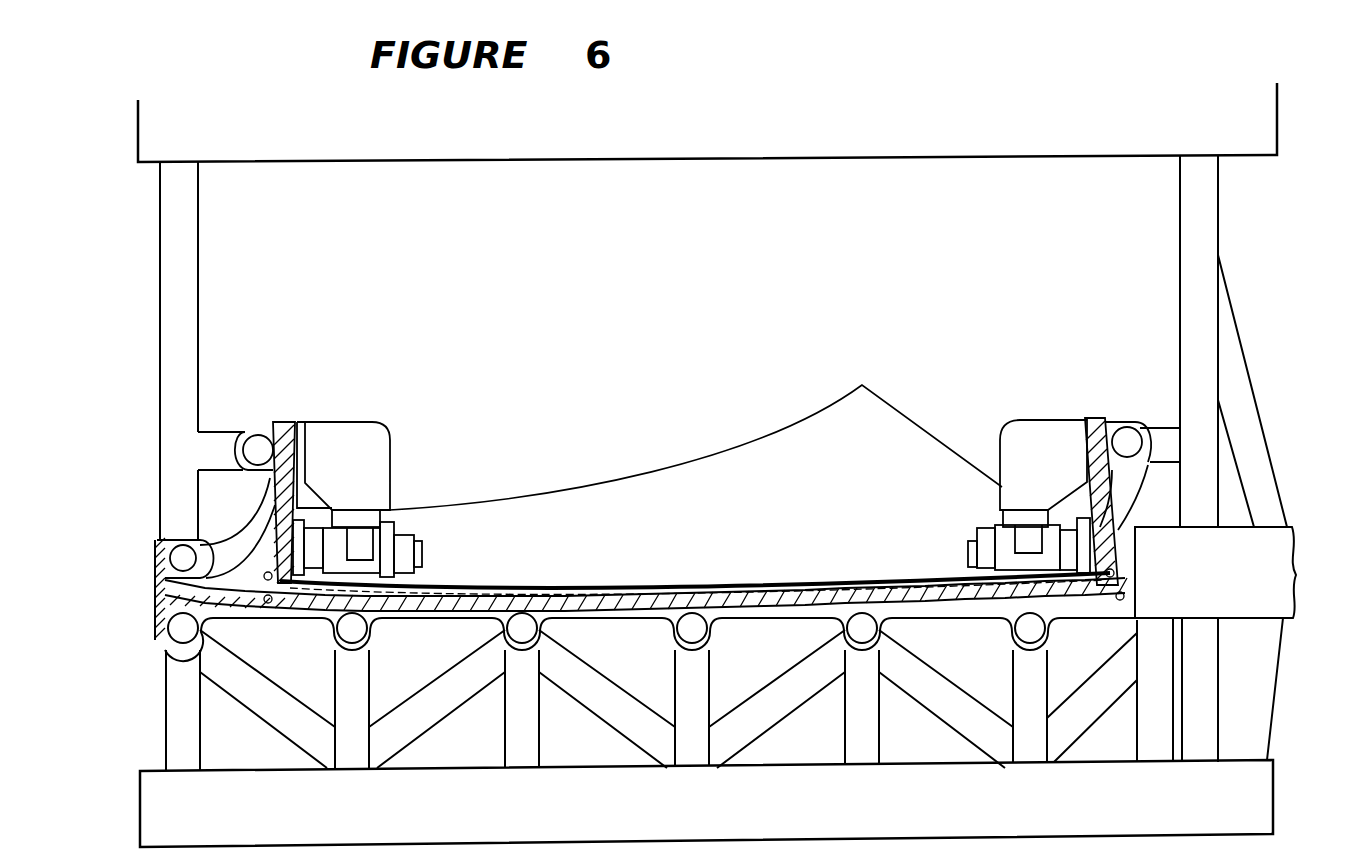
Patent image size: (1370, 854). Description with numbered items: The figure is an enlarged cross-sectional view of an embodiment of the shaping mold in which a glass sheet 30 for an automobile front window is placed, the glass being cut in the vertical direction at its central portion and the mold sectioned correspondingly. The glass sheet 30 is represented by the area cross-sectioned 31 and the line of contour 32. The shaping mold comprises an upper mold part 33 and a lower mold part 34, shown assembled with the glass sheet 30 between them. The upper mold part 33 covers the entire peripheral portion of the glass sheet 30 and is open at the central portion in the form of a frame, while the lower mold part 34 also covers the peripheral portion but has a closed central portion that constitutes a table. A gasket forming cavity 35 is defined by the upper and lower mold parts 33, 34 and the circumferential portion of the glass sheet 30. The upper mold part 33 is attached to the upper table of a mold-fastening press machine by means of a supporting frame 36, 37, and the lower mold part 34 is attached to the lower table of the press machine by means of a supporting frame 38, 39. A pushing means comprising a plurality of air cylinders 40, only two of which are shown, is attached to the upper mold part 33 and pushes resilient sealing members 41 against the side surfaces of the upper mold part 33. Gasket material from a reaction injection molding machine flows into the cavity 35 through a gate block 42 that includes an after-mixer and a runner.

The glass sheet 30 is at (872, 494).
The area cross-sectioned 31 is at (612, 585).
The line of contour 32 is at (752, 450).
The upper mold part 33 is at (282, 560).
The lower mold part 34 is at (205, 650).
The gasket forming cavity 35 is at (253, 610).
The supporting frame 36 is at (183, 330).
The supporting frame 37 is at (610, 128).
The supporting frame 38 is at (180, 752).
The supporting frame 39 is at (600, 822).
The air cylinders 40 is at (405, 535).
The resilient sealing members 41 is at (280, 535).
The gate block 42 is at (1190, 589).